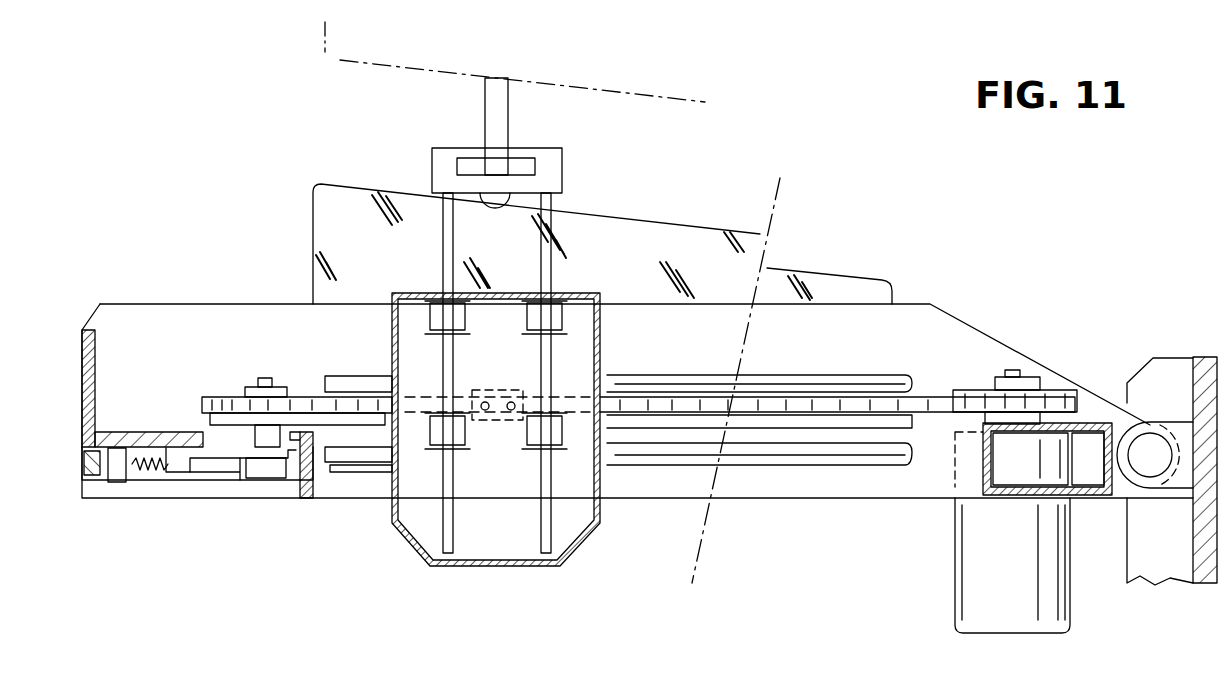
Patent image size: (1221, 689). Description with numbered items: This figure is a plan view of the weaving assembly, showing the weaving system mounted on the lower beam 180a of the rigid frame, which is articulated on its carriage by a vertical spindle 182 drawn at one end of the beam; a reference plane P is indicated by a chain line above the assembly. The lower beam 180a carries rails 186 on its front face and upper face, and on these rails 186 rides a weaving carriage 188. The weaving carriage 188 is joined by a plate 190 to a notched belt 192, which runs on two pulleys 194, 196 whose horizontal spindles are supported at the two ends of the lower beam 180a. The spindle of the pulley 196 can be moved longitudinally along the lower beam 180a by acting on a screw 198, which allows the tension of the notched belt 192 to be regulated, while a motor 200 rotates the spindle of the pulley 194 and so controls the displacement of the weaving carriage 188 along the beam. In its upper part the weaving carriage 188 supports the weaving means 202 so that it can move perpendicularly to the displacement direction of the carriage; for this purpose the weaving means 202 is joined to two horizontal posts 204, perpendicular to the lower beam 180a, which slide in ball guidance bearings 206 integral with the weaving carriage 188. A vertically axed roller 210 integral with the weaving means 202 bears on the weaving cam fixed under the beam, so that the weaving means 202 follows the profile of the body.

The reference plane P is at (325, 54).
The lower beam 180a is at (235, 312).
The vertical spindle 182 is at (1163, 463).
The rails 186 is at (646, 447).
The weaving carriage 188 is at (416, 520).
The plate 190 is at (500, 424).
The notched belt 192 is at (930, 398).
The pulley 194 is at (1045, 388).
The pulley 196 is at (217, 392).
The screw 198 is at (152, 480).
The motor 200 is at (978, 575).
The weaving means 202 is at (497, 112).
The horizontal posts 204 is at (447, 212).
The ball guidance bearings 206 is at (433, 416).
The vertically axed roller 210 is at (503, 198).